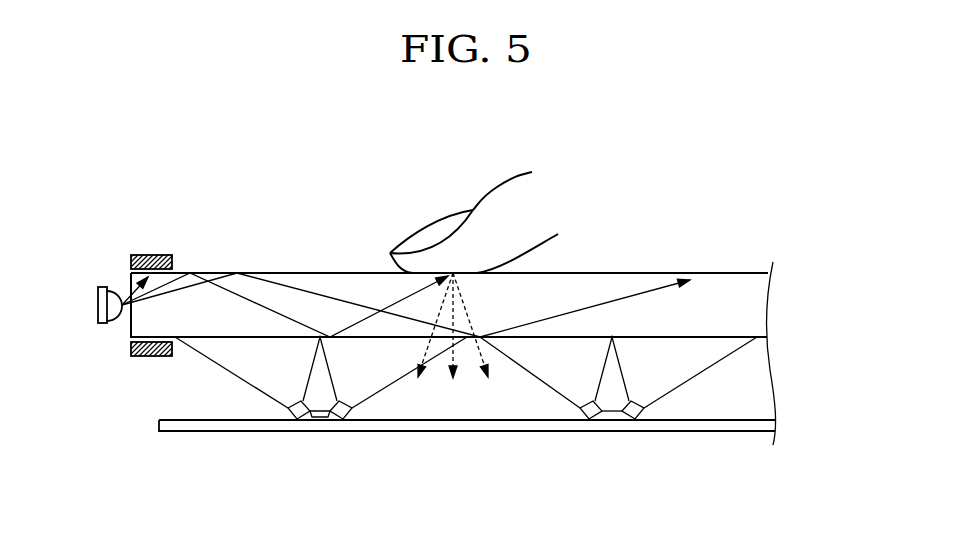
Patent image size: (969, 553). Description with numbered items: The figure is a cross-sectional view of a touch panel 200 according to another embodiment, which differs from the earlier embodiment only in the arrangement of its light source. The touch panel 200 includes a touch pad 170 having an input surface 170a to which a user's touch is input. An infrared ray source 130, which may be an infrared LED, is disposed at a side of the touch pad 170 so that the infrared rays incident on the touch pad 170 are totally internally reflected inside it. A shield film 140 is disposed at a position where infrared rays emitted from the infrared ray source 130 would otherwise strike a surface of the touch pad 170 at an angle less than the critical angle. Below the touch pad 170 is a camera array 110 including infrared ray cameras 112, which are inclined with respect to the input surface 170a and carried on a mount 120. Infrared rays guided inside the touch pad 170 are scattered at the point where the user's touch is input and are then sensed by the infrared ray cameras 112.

The touch panel 200 is at (170, 217).
The touch pad 170 is at (756, 303).
The input surface 170a is at (733, 272).
The infrared ray source 130 is at (100, 317).
The shield film 140 is at (142, 357).
The camera array 110 is at (273, 418).
The infrared ray camera 112 is at (298, 421).
The mount 120 is at (325, 417).